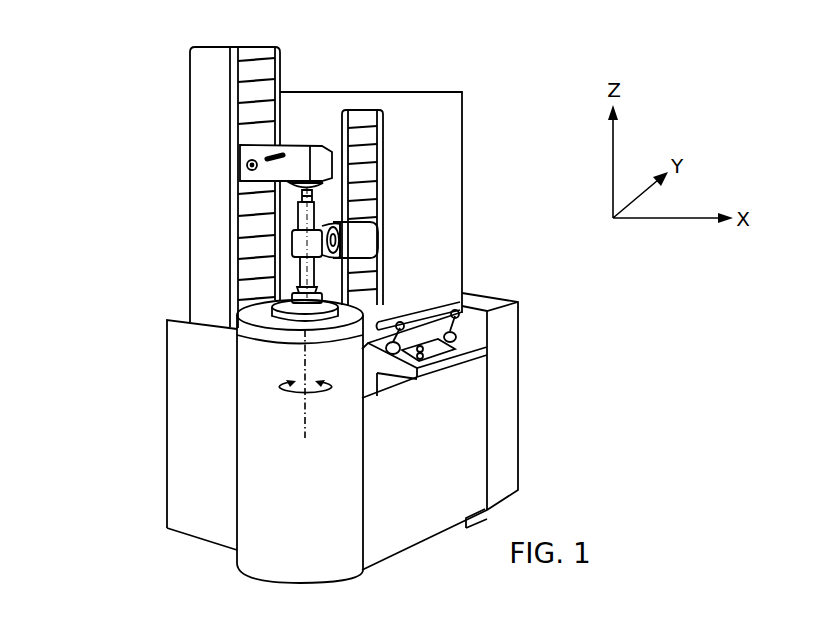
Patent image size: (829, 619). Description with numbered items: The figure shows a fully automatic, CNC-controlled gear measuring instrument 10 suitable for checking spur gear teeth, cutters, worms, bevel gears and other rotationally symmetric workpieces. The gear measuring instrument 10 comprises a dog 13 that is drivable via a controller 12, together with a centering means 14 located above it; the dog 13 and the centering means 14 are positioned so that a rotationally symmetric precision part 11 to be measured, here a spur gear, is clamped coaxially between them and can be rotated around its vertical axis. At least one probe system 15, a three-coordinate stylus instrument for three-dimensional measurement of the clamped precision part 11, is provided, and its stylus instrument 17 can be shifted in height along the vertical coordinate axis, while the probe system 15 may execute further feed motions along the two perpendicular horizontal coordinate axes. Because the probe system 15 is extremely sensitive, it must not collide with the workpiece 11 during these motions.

The gear measuring instrument 10 is at (99, 84).
The precision part 11 is at (292, 242).
The controller 12 is at (467, 442).
The dog 13 is at (270, 303).
The centering means 14 is at (255, 190).
The probe system 15 is at (379, 227).
The stylus instrument 17 is at (360, 260).